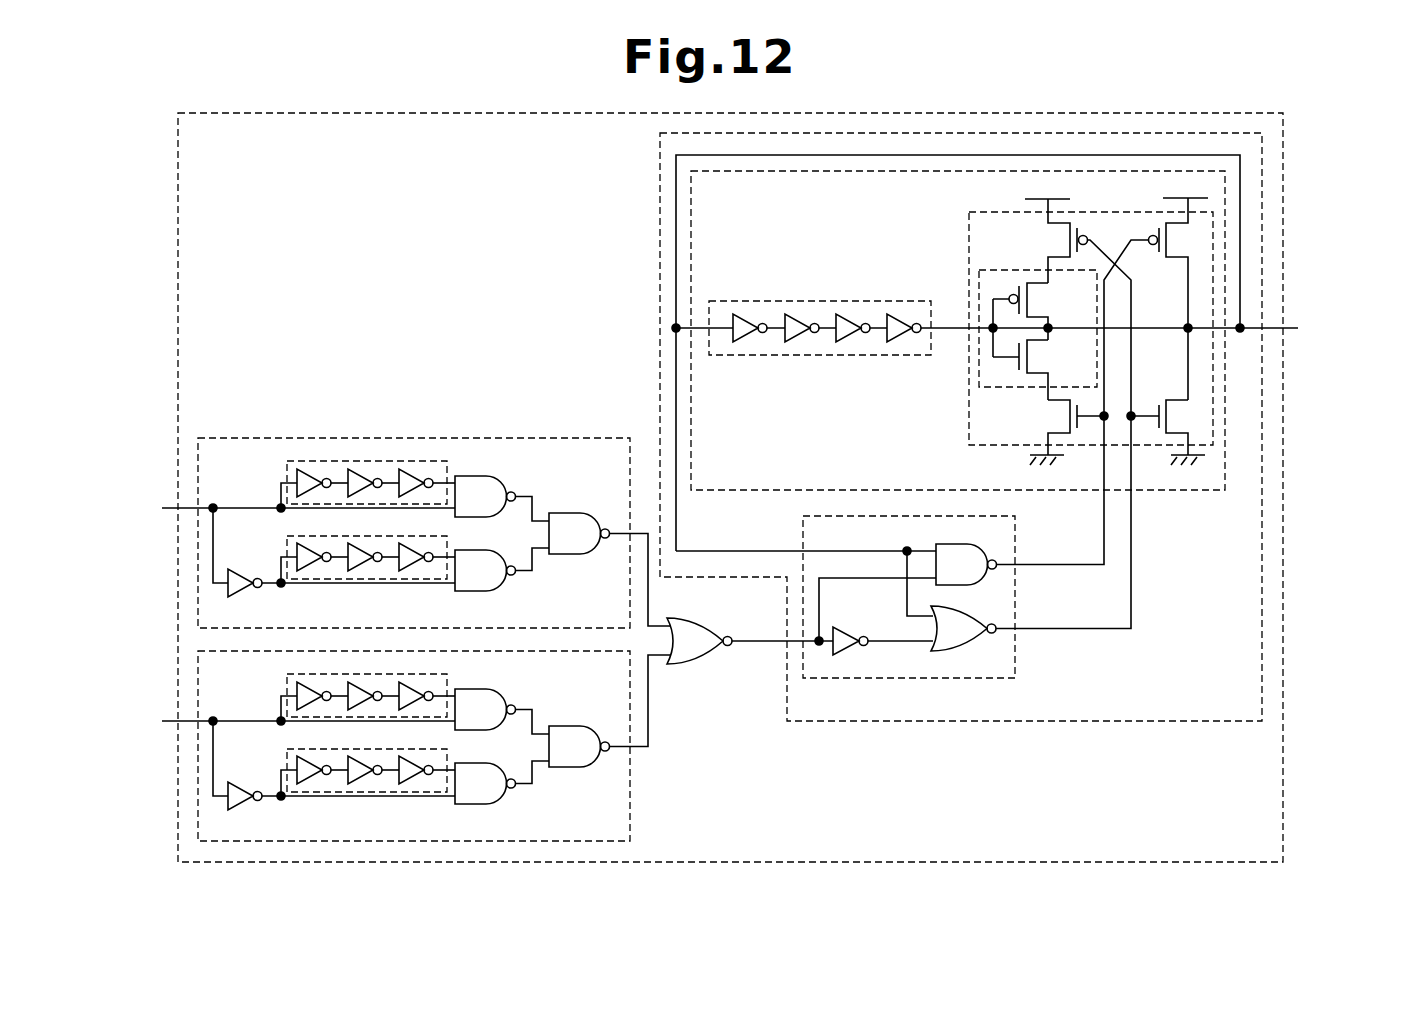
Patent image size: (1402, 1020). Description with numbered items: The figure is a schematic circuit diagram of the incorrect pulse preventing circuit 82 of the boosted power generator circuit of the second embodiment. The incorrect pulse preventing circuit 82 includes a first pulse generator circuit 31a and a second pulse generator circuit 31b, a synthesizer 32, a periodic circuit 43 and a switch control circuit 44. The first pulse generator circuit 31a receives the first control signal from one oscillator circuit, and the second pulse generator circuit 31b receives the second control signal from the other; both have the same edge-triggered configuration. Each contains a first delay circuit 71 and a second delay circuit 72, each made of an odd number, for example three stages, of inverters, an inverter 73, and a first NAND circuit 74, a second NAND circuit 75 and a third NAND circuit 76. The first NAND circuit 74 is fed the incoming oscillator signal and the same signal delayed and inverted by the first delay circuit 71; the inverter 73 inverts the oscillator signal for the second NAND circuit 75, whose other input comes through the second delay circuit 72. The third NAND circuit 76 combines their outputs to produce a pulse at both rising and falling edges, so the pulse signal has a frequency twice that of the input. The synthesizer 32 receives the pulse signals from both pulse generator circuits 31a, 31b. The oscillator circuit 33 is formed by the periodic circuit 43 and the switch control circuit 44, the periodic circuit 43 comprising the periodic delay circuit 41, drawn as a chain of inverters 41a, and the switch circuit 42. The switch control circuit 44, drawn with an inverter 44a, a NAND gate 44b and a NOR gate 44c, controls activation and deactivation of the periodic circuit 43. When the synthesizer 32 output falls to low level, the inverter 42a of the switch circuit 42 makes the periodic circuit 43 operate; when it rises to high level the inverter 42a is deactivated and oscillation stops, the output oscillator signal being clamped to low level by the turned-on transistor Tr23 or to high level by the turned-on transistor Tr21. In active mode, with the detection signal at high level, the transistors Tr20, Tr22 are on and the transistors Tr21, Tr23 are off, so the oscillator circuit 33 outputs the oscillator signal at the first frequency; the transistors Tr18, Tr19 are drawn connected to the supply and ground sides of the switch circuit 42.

The incorrect pulse preventing circuit 82 is at (1283, 711).
The first pulse generator circuit 31a is at (575, 436).
The second pulse generator circuit 31b is at (632, 806).
The first delay circuit 71 is at (285, 467).
The second delay circuit 72 is at (285, 543).
The inverter 73 is at (243, 590).
The first NAND circuit 74 is at (471, 475).
The second NAND circuit 75 is at (471, 592).
The third NAND circuit 76 is at (565, 555).
The synthesizer 32 is at (690, 663).
The oscillator circuit 33 is at (1098, 722).
The periodic delay circuit 41 is at (779, 356).
The inverter 41a is at (899, 314).
The switch circuit 42 is at (1086, 211).
The inverter 42a is at (968, 377).
The periodic circuit 43 is at (1168, 490).
The switch control circuit 44 is at (980, 679).
The inverter 44a is at (840, 627).
The NAND gate 44b is at (962, 586).
The NOR gate 44c is at (962, 651).
The PMOS transistor Tr18 is at (1037, 277).
The NMOS transistor Tr19 is at (1017, 377).
The transistor Tr20 is at (1070, 260).
The transistor Tr21 is at (1162, 260).
The transistor Tr22 is at (1075, 400).
The transistor Tr23 is at (1177, 400).